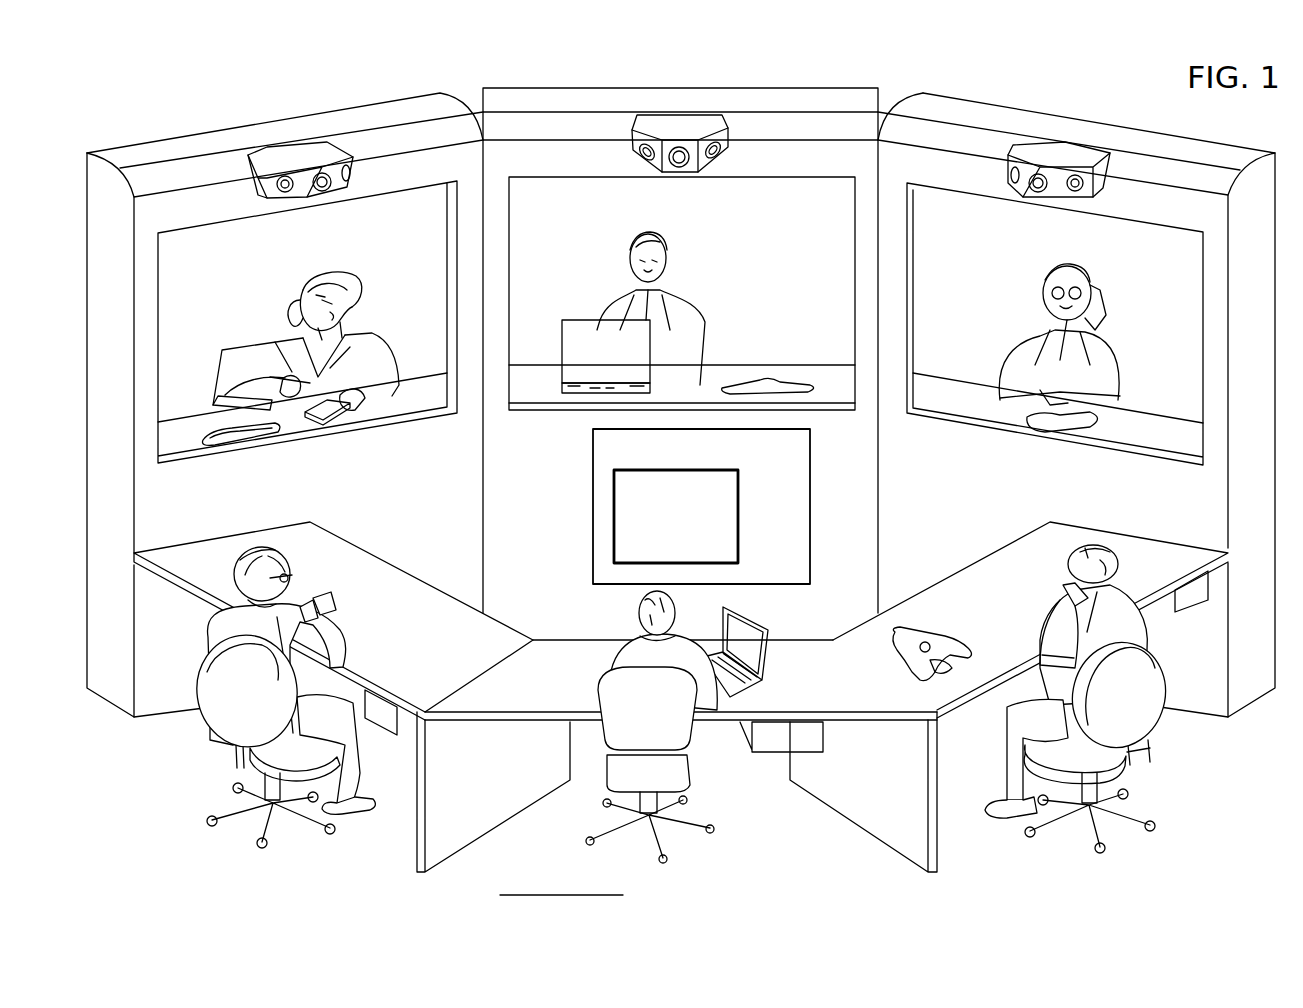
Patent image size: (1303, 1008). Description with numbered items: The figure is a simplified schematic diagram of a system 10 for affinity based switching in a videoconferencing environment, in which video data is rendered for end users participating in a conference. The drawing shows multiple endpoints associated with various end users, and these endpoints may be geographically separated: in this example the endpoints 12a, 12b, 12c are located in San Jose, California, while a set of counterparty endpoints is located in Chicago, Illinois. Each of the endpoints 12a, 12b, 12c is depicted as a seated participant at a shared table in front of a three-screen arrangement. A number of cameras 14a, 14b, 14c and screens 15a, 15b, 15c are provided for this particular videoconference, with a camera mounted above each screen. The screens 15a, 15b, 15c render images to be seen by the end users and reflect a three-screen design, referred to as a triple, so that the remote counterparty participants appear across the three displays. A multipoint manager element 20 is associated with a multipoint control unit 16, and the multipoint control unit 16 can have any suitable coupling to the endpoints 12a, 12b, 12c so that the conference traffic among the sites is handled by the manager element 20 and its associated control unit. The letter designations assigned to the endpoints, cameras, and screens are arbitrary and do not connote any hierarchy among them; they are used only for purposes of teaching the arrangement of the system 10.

The system 10 is at (139, 108).
The endpoint 12a is at (380, 718).
The endpoint 12b is at (777, 742).
The endpoint 12c is at (1193, 596).
The camera 14a is at (307, 153).
The camera 14b is at (680, 120).
The camera 14c is at (1058, 153).
The screen 15a is at (415, 251).
The screen 15b is at (795, 228).
The screen 15c is at (1168, 270).
The multipoint control unit (MCU) 16 is at (810, 504).
The multipoint manager element 20 is at (738, 516).